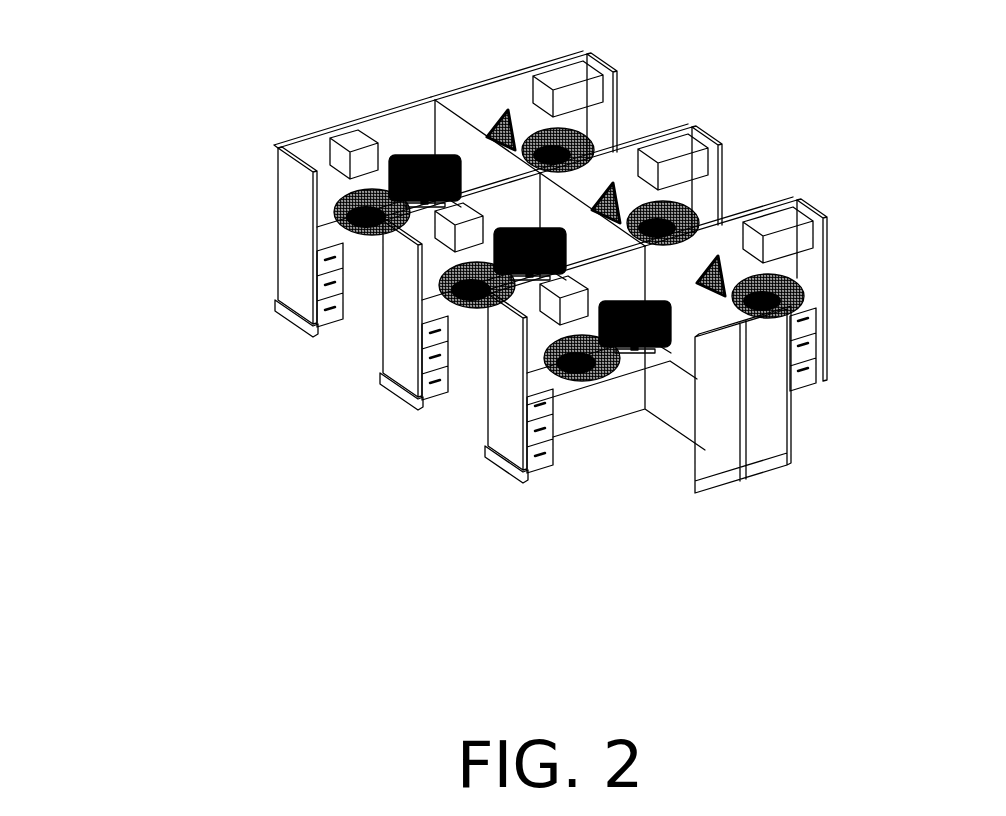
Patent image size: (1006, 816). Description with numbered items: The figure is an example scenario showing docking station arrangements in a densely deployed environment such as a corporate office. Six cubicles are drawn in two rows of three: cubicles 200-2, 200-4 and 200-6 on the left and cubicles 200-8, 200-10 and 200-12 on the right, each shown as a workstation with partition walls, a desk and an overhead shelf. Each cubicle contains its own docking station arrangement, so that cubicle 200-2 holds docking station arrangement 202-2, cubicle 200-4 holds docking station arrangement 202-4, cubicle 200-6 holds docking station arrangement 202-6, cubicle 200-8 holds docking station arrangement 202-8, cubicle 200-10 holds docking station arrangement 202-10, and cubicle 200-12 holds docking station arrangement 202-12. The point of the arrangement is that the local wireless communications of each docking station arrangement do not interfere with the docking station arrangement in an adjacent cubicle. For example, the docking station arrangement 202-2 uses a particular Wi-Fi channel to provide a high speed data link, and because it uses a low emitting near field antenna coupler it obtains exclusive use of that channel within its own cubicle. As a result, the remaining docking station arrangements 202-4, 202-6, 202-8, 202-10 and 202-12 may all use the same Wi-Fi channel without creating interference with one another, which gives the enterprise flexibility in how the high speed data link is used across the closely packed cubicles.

The cubicle 200-2 is at (272, 142).
The cubicle 200-4 is at (380, 322).
The cubicle 200-6 is at (492, 412).
The cubicle 200-8 is at (620, 66).
The cubicle 200-10 is at (730, 138).
The cubicle 200-12 is at (838, 212).
The docking station arrangement 202-2 is at (358, 248).
The docking station arrangement 202-4 is at (460, 323).
The docking station arrangement 202-6 is at (565, 398).
The docking station arrangement 202-8 is at (600, 140).
The docking station arrangement 202-10 is at (705, 215).
The docking station arrangement 202-12 is at (812, 300).